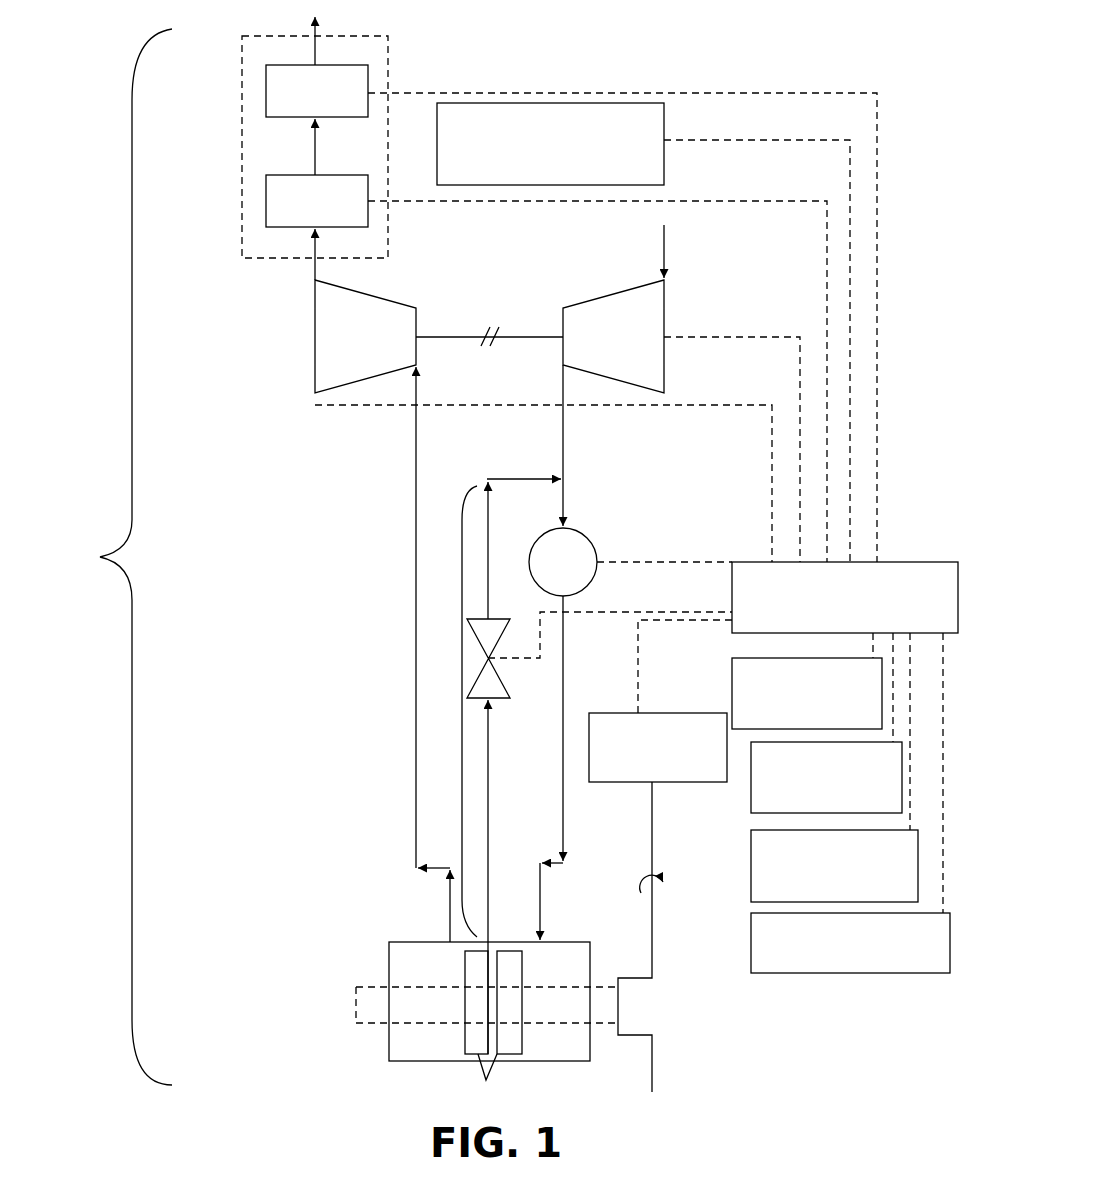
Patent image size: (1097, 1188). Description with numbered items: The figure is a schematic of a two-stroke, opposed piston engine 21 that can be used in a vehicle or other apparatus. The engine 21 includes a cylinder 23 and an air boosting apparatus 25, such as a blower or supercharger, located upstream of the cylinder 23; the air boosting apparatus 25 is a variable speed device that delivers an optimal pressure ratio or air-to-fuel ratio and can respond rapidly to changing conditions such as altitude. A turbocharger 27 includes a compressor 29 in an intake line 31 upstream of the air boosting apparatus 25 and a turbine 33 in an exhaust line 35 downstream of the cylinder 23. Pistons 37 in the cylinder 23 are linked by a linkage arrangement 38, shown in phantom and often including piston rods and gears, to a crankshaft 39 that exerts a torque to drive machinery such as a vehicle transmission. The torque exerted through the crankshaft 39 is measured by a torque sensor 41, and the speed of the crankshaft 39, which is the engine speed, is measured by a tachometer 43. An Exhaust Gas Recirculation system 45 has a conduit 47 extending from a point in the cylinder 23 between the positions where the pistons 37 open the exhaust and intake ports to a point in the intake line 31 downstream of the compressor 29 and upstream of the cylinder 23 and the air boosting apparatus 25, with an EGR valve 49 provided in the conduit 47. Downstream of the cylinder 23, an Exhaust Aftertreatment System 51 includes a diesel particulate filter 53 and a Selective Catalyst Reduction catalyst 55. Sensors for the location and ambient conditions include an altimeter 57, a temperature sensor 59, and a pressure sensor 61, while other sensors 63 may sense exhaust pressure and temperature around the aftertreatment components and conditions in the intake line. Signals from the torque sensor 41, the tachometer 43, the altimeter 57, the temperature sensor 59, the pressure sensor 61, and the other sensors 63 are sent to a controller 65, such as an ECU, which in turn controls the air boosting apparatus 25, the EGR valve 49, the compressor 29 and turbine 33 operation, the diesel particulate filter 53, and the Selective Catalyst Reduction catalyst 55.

The two-stroke, opposed piston engine 21 is at (109, 557).
The cylinder 23 is at (389, 945).
The air boosting apparatus 25 is at (630, 652).
The turbocharger 27 is at (522, 335).
The compressor 29 is at (681, 421).
The intake line 31 is at (670, 250).
The turbine 33 is at (543, 395).
The exhaust line 35 is at (412, 464).
The pistons 37 is at (493, 1084).
The linkage arrangement 38 is at (356, 1007).
The crankshaft 39 is at (652, 1070).
The torque sensor 41 is at (636, 713).
The tachometer 43 is at (751, 935).
The Exhaust Gas Recirculation (EGR) system 45 is at (461, 708).
The conduit 47 is at (498, 479).
The EGR valve 49 is at (510, 698).
The Exhaust Aftertreatment System (EATS) 51 is at (238, 137).
The diesel particulate filter (DPF) 53 is at (266, 203).
The Selective Catalyst Reduction catalyst (SCR) 55 is at (266, 97).
The altimeter 57 is at (751, 860).
The temperature sensor 59 is at (732, 682).
The pressure sensor 61 is at (751, 806).
The other sensors 63 is at (552, 103).
The controller 65 is at (732, 562).